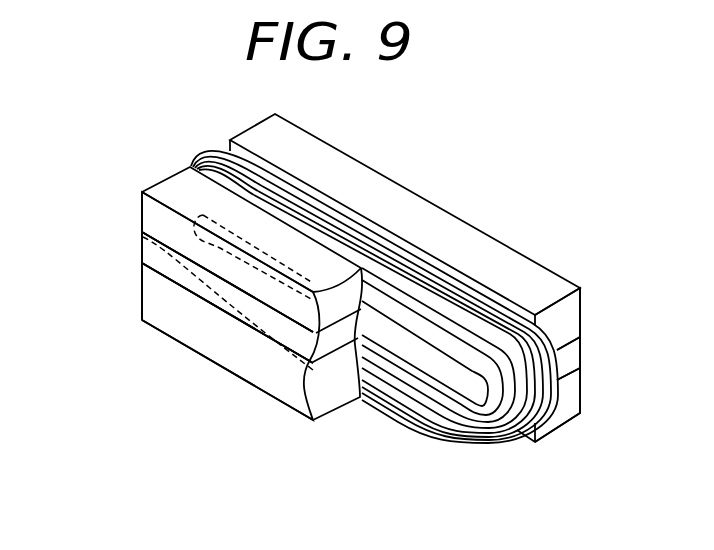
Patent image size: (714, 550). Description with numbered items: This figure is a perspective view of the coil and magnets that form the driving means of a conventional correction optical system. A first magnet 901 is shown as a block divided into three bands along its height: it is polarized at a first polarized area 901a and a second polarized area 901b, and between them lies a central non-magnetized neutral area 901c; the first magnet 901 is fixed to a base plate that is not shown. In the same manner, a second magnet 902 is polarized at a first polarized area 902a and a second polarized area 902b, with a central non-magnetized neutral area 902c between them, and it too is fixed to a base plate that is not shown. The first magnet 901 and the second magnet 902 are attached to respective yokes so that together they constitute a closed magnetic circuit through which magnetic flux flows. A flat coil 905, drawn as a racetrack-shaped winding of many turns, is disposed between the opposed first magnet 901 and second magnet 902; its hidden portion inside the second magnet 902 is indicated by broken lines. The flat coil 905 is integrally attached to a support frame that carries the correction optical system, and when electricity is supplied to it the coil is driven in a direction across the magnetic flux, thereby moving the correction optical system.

The first magnet 901 is at (507, 258).
The polarized area of first magnet 901a is at (579, 308).
The central non-magnetized neutral area of first magnet 901c is at (579, 352).
The polarized area of first magnet 901b is at (579, 398).
The second magnet 902 is at (142, 197).
The polarized area of second magnet 902a is at (142, 227).
The central non-magnetized neutral area of second magnet 902c is at (142, 257).
The polarized area of second magnet 902b is at (142, 302).
The flat coil 905 is at (488, 438).